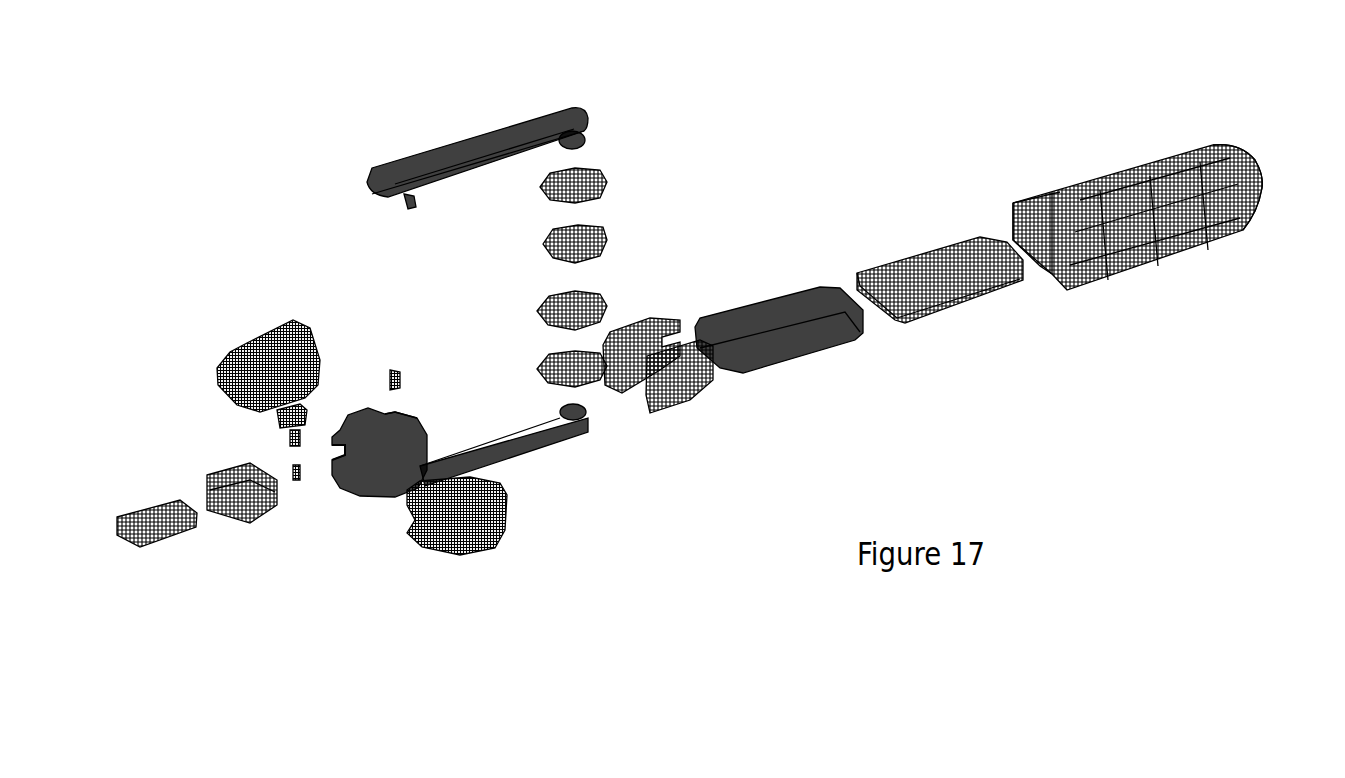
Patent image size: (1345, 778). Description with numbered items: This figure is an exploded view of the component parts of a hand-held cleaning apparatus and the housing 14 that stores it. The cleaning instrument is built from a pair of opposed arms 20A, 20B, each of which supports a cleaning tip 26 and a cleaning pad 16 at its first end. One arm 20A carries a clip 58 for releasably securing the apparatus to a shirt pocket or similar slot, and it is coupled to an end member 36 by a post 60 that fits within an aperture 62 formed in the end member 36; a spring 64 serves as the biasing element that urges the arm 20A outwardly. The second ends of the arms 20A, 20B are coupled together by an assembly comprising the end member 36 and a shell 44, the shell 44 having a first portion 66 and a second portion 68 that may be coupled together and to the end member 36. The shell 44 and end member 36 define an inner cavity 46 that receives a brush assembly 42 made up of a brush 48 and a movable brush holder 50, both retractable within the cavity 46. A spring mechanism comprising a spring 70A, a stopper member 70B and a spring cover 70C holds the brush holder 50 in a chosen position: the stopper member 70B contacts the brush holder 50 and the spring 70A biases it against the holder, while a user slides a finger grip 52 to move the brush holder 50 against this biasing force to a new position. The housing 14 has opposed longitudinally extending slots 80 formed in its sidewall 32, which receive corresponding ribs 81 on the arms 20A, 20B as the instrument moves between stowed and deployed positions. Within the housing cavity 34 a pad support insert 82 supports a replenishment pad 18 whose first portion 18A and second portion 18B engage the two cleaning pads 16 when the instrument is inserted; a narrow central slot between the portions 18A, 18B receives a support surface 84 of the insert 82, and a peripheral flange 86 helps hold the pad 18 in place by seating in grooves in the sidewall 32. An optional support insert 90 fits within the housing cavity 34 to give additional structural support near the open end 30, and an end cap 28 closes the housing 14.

The housing 14 is at (1139, 219).
The cleaning pad 16 is at (543, 244).
The replenishment pad 18 is at (779, 308).
The first portion 18A is at (783, 310).
The second portion 18B is at (800, 353).
The arm 20A is at (460, 173).
The arm 20B is at (560, 440).
The cleaning tip 26 is at (540, 191).
The end cap 28 is at (1257, 180).
The open end 30 is at (1027, 237).
The sidewall 32 is at (1140, 267).
The housing cavity 34 is at (1050, 240).
The end member 36 is at (370, 500).
The brush assembly 42 is at (188, 539).
The shell 44 is at (475, 522).
The inner cavity 46 is at (340, 460).
The brush 48 is at (140, 547).
The brush holder 50 is at (253, 513).
The finger grip 52 is at (207, 475).
The clip 58 is at (530, 120).
The post 60 is at (413, 203).
The aperture 62 is at (417, 426).
The spring 64 is at (393, 377).
The first portion 66 is at (487, 537).
The second portion 68 is at (260, 343).
The spring 70A is at (293, 470).
The stopper member 70B is at (290, 435).
The spring cover 70C is at (303, 413).
The slots 80 is at (1073, 203).
The ribs 81 is at (470, 158).
The pad support insert 82 is at (943, 309).
The support surface 84 is at (918, 277).
The peripheral flange 86 is at (918, 310).
The support insert 90 is at (677, 393).